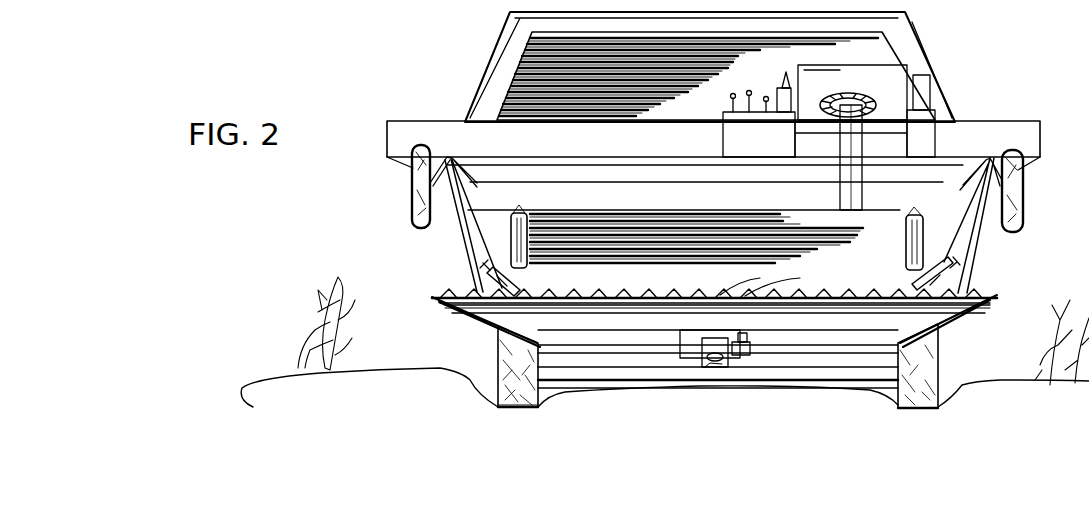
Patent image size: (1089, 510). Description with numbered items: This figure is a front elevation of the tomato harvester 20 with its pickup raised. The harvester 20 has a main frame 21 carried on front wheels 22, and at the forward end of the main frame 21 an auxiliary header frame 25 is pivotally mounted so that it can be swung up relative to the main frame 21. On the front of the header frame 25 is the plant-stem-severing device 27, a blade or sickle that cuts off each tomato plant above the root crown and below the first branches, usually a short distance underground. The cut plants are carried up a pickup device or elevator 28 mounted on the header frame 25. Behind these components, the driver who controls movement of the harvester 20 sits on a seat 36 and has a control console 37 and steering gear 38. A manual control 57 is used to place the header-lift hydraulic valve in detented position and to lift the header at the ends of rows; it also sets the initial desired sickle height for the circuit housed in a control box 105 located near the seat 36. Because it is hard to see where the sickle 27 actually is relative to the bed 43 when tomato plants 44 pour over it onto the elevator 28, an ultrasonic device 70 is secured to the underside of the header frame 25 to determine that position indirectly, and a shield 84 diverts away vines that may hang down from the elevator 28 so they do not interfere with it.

The tomato harvester 20 is at (438, 110).
The main frame 21 is at (1030, 143).
The front wheels 22 is at (518, 385).
The header frame 25 is at (955, 330).
The plant-stem-severing device 27 is at (842, 291).
The pickup device or elevator 28 is at (477, 312).
The seat 36 is at (810, 117).
The control console 37 is at (770, 97).
The steering gear 38 is at (860, 96).
The bed 43 is at (380, 367).
The tomato plants 44 is at (342, 292).
The manual control 57 is at (789, 80).
The ultrasonic device 70 is at (708, 368).
The shield 84 is at (692, 340).
The control box 105 is at (927, 87).